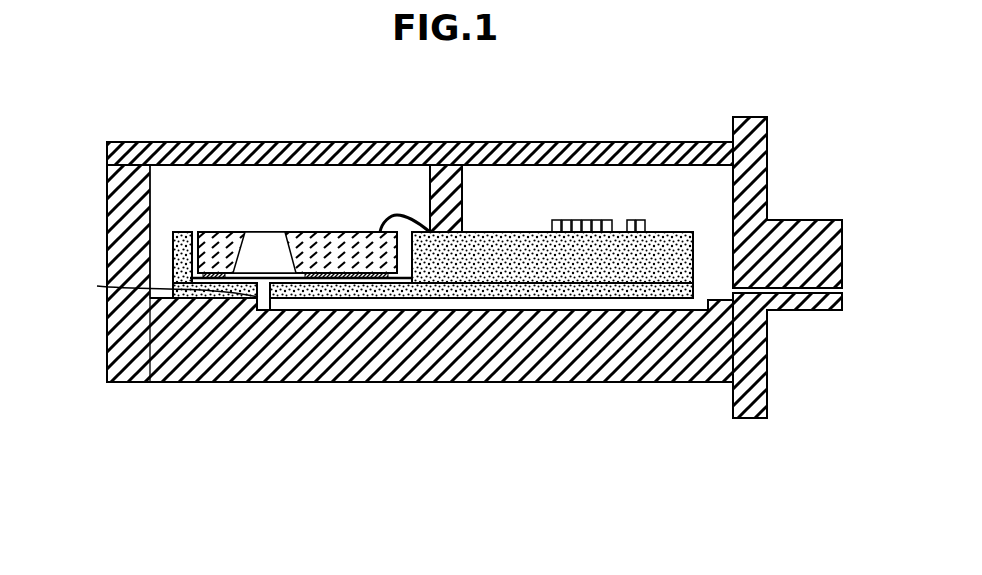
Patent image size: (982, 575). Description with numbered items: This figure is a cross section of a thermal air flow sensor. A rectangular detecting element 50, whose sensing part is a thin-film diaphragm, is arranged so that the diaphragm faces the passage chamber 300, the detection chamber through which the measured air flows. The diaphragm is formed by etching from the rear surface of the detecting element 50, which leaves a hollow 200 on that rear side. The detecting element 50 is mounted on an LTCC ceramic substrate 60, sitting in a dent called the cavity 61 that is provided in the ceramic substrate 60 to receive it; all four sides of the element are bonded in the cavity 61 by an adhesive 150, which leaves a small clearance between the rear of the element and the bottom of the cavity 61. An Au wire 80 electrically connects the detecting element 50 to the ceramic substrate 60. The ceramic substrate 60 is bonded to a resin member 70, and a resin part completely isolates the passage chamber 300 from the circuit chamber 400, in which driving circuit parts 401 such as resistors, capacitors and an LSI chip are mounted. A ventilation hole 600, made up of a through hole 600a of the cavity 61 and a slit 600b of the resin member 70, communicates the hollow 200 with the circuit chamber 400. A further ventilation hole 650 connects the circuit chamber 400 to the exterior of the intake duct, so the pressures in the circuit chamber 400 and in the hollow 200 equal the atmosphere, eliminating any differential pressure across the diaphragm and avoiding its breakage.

The detecting element 50 is at (330, 232).
The ceramic substrate 60 is at (545, 284).
The cavity 61 is at (196, 275).
The resin member 70 is at (187, 340).
The Au wire 80 is at (397, 214).
The adhesive 150 is at (363, 280).
The hollow 200 is at (272, 247).
The passage chamber 300 is at (223, 197).
The circuit chamber 400 is at (517, 200).
The driving circuit parts 401 is at (600, 220).
The ventilation hole 600 is at (307, 284).
The through hole 600a is at (145, 288).
The slit 600b is at (452, 311).
The ventilation hole 650 is at (790, 294).